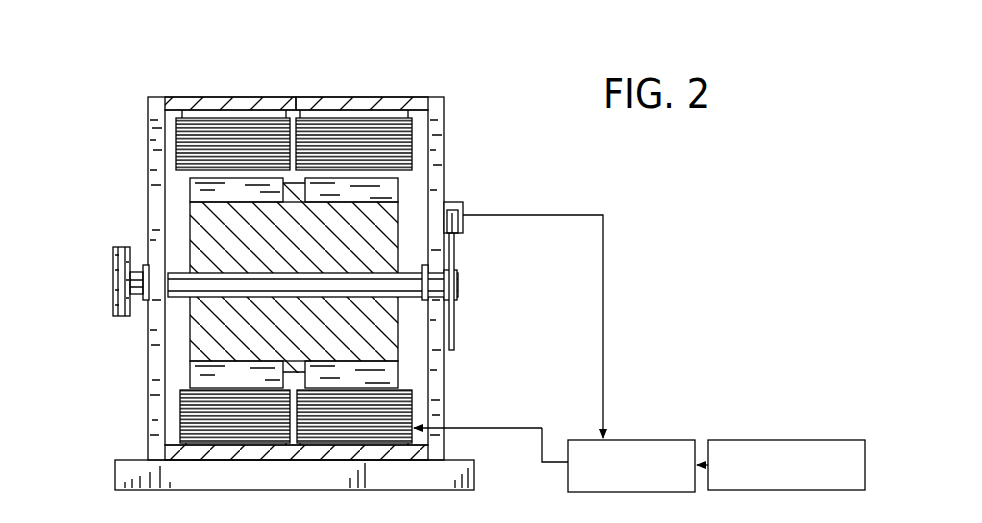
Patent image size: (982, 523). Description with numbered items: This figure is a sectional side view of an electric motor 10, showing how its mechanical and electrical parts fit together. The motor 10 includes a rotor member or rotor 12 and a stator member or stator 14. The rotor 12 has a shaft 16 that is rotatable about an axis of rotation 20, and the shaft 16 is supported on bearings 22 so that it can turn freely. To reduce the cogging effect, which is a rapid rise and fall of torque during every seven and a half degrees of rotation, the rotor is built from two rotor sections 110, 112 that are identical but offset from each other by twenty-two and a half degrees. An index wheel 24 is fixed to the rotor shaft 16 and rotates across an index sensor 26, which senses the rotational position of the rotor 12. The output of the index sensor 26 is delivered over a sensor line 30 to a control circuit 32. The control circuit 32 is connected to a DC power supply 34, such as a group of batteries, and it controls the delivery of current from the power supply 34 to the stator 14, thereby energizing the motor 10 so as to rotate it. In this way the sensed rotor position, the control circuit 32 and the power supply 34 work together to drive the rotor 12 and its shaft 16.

The electric motor 10 is at (412, 94).
The rotor section 110 is at (240, 94).
The rotor section 112 is at (356, 94).
The stator member 14 is at (178, 152).
The rotor member 12 is at (186, 220).
The shaft 16 is at (178, 308).
The bearings 22 is at (145, 265).
The axis of rotation 20 is at (110, 284).
The index wheel 24 is at (455, 336).
The index sensor 26 is at (456, 203).
The sensor line 30 is at (603, 256).
The control circuit 32 is at (633, 440).
The DC power supply 34 is at (736, 440).